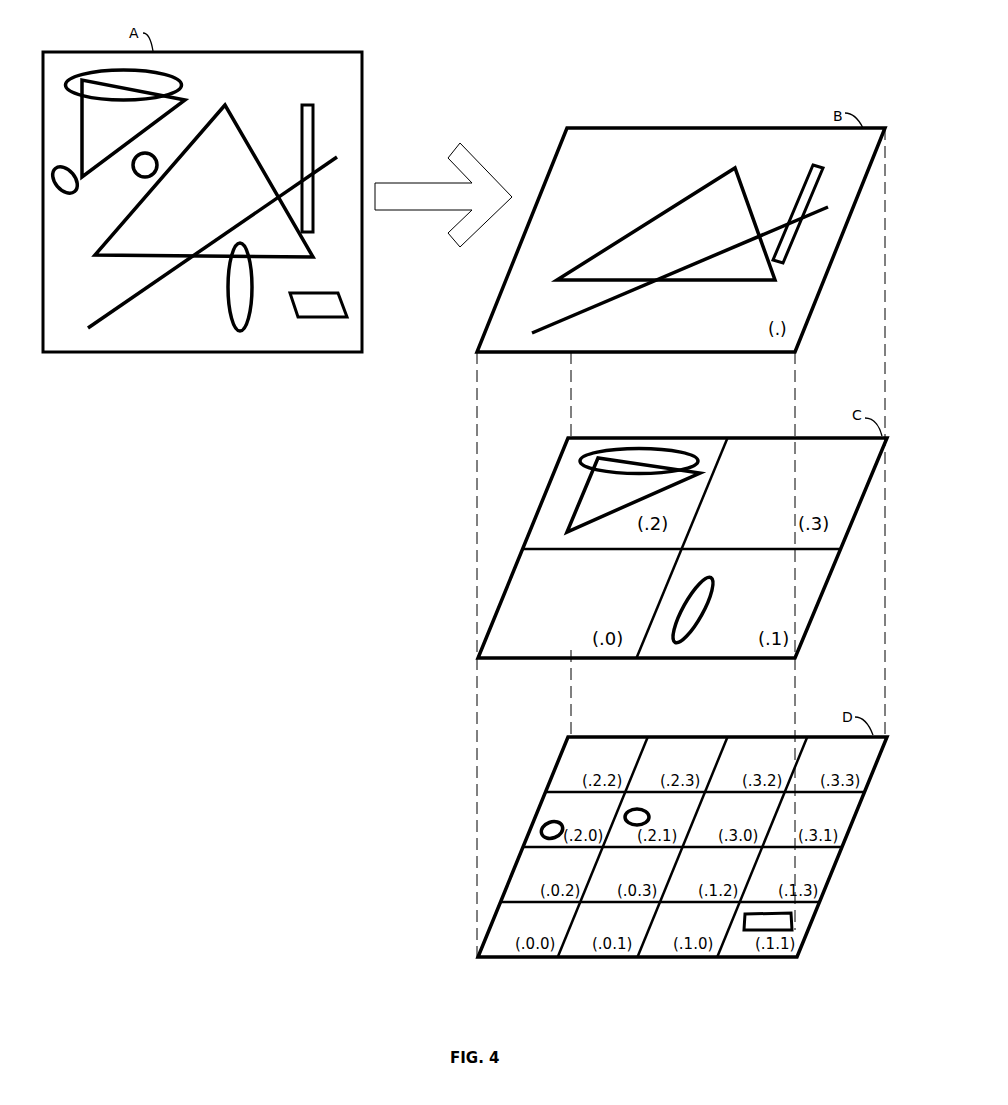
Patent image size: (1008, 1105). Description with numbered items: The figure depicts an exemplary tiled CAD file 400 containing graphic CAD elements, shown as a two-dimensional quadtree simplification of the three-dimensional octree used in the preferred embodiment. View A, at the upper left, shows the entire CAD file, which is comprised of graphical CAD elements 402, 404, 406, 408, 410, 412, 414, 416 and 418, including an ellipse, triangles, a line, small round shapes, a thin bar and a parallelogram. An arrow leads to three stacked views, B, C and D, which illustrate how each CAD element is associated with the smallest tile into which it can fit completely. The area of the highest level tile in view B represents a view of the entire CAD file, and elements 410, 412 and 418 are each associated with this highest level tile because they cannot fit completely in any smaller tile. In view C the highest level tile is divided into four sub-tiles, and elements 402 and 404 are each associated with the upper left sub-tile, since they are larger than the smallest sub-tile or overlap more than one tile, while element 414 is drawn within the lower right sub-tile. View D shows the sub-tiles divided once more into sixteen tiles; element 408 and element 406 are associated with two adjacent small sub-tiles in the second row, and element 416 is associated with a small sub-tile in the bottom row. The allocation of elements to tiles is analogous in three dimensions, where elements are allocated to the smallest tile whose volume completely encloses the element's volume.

The tiled CAD file 400 is at (227, 50).
The graphical CAD element 402 is at (167, 72).
The graphical CAD element 404 is at (183, 100).
The graphical CAD element 406 is at (77, 172).
The graphical CAD element 408 is at (147, 177).
The graphical CAD element 410 is at (235, 117).
The graphical CAD element 412 is at (152, 282).
The graphical CAD element 414 is at (229, 302).
The graphical CAD element 416 is at (293, 292).
The graphical CAD element 418 is at (313, 118).